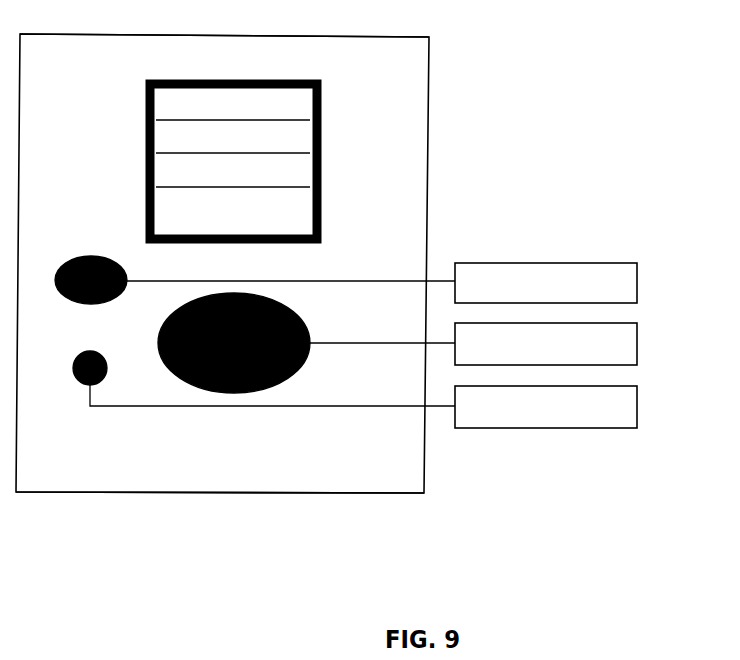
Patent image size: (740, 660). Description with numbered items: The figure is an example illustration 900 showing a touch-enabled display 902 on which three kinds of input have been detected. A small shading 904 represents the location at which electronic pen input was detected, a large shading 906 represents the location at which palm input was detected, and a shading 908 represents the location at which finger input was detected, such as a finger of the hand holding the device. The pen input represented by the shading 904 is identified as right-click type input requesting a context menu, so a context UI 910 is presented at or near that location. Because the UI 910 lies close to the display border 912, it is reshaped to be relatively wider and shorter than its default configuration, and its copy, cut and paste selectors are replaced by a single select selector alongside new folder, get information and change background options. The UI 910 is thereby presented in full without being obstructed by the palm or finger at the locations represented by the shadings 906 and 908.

The illustration 900 is at (444, 52).
The touch-enabled display 902 is at (309, 479).
The shading representing pen input location 904 is at (640, 402).
The shading representing palm input location 906 is at (640, 338).
The shading representing finger input location 908 is at (640, 278).
The context UI 910 is at (326, 93).
The display border 912 is at (284, 35).